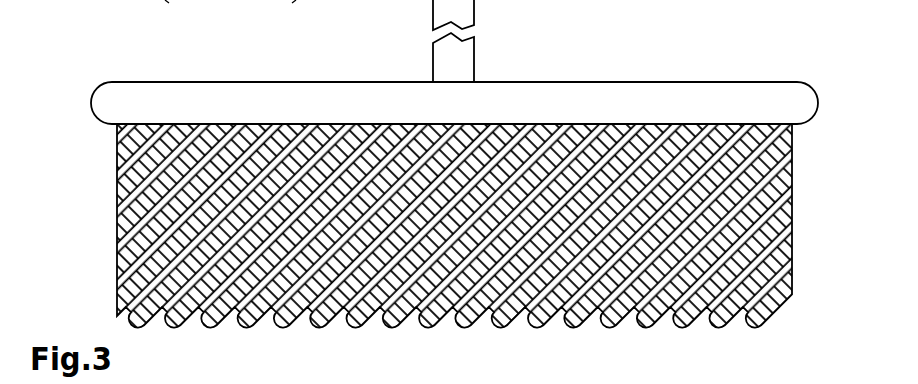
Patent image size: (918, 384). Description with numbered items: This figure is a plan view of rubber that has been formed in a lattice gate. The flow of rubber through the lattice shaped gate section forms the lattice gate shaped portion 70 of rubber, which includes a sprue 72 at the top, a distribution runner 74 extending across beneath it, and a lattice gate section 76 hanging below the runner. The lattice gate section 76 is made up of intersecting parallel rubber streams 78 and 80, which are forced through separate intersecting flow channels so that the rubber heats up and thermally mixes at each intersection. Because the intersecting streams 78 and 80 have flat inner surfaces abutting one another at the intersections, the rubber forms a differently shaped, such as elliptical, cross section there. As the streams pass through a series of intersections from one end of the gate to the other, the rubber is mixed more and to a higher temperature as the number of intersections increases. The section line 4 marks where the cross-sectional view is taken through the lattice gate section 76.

The lattice gate shaped portion 70 is at (717, 57).
The sprue 72 is at (462, 65).
The distribution runner 74 is at (590, 97).
The lattice gate section 76 is at (88, 202).
The rubber stream 78 is at (732, 167).
The rubber stream 80 is at (748, 208).
The section line 4- 4 is at (100, 252).